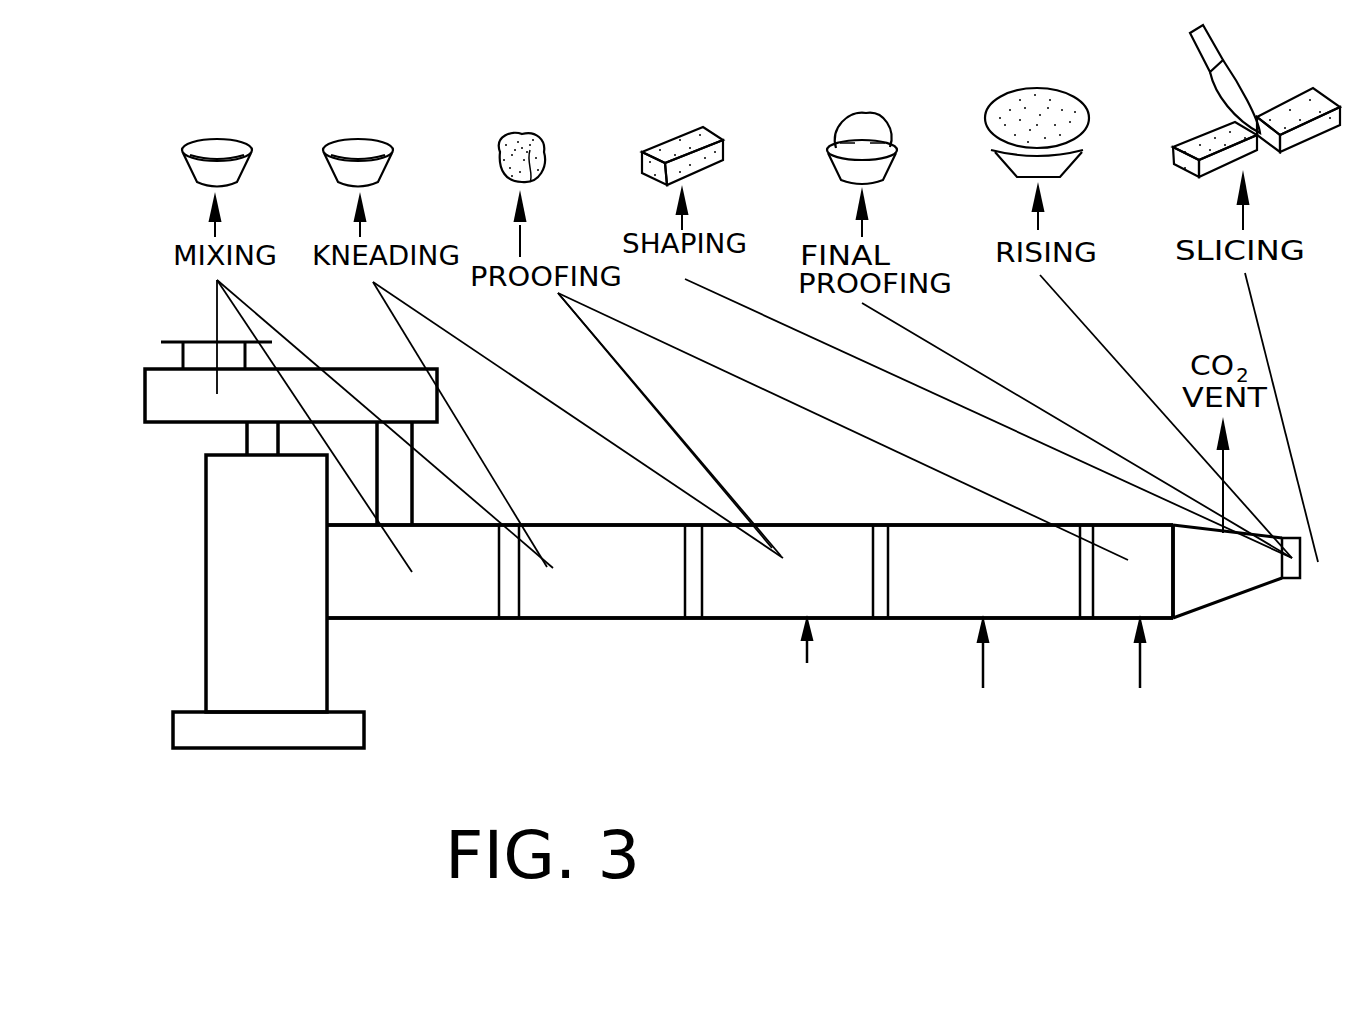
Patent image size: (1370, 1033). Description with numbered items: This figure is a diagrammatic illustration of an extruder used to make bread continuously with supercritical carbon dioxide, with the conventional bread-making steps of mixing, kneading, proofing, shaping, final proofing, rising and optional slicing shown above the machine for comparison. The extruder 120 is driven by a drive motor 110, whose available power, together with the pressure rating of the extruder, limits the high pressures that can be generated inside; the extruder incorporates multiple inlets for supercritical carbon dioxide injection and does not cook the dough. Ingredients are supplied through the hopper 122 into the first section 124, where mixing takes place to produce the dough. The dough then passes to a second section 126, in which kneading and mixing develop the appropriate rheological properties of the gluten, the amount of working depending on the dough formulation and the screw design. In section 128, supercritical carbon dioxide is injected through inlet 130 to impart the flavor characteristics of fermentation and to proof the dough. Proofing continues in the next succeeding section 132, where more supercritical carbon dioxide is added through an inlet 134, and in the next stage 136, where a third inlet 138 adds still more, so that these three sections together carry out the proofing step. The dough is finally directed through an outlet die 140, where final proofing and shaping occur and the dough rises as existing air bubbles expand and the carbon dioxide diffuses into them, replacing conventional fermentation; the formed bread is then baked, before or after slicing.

The drive motor 110 is at (216, 601).
The extruder 120 is at (555, 645).
The hopper 122 is at (357, 369).
The first section 124 is at (427, 607).
The second section 126 is at (642, 598).
The section 128 is at (758, 600).
The inlet 130 is at (808, 662).
The next succeeding section 132 is at (918, 600).
The inlet 134 is at (985, 663).
The next stage 136 is at (1112, 600).
The third inlet 138 is at (1142, 663).
The outlet die 140 is at (1297, 580).